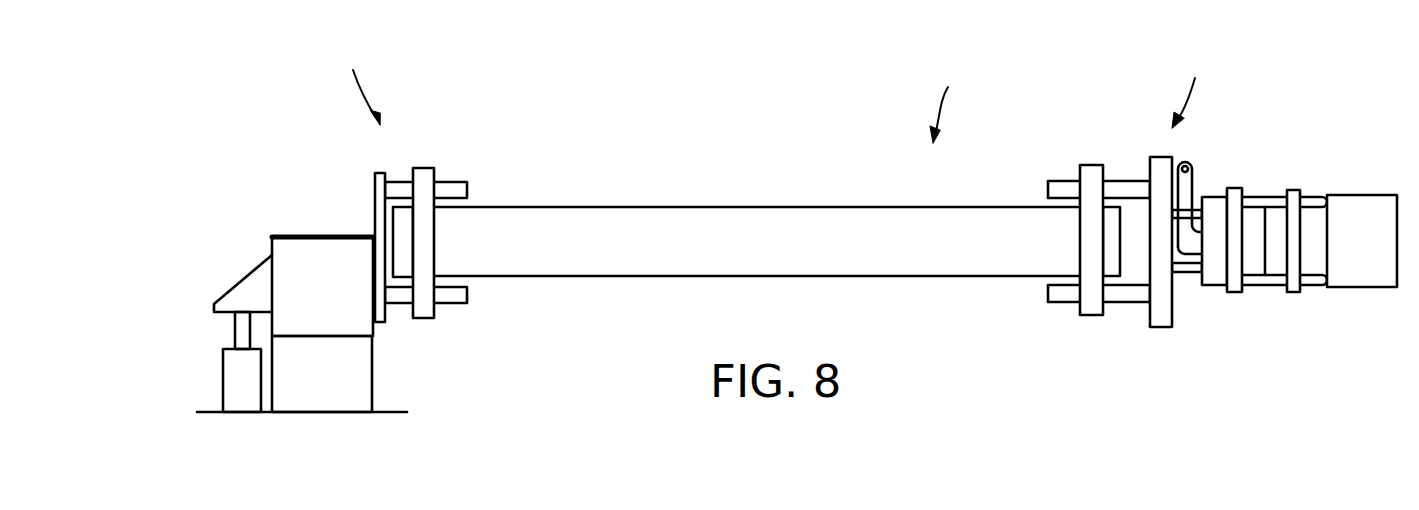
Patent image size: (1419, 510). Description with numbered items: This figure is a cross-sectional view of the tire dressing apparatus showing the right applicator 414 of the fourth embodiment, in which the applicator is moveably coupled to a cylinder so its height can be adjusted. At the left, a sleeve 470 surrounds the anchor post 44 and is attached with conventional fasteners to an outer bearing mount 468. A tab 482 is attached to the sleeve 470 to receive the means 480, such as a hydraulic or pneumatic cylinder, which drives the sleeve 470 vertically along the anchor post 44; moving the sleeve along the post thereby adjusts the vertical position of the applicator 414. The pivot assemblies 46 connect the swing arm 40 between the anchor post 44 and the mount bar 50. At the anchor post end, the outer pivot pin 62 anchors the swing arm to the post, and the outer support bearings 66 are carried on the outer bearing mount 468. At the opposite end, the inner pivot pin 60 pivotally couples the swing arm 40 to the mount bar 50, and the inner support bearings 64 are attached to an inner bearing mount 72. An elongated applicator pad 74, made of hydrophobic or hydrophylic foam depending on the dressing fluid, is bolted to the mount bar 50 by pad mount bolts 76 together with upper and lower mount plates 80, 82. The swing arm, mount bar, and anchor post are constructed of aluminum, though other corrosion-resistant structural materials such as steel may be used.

The swing arm 40 is at (792, 232).
The anchor post 44 is at (345, 377).
The pivot assemblies 46 is at (775, 81).
The mount bar 50 is at (1212, 265).
The inner pivot pin 60 is at (1090, 178).
The outer pivot pin 62 is at (423, 172).
The inner support bearings 64 is at (1062, 187).
The outer support bearings 66 is at (452, 188).
The inner bearing mount 72 is at (1160, 170).
The applicator pad 74 is at (1352, 268).
The pad mount bolts 76 is at (1237, 200).
The upper mount plate 80 is at (1212, 200).
The lower mount plate 82 is at (1260, 280).
The right applicator 414 is at (943, 96).
The outer bearing mount 468 is at (378, 195).
The sleeve 470 is at (307, 265).
The means for driving the sleeve 480 is at (232, 378).
The tab 482 is at (250, 292).